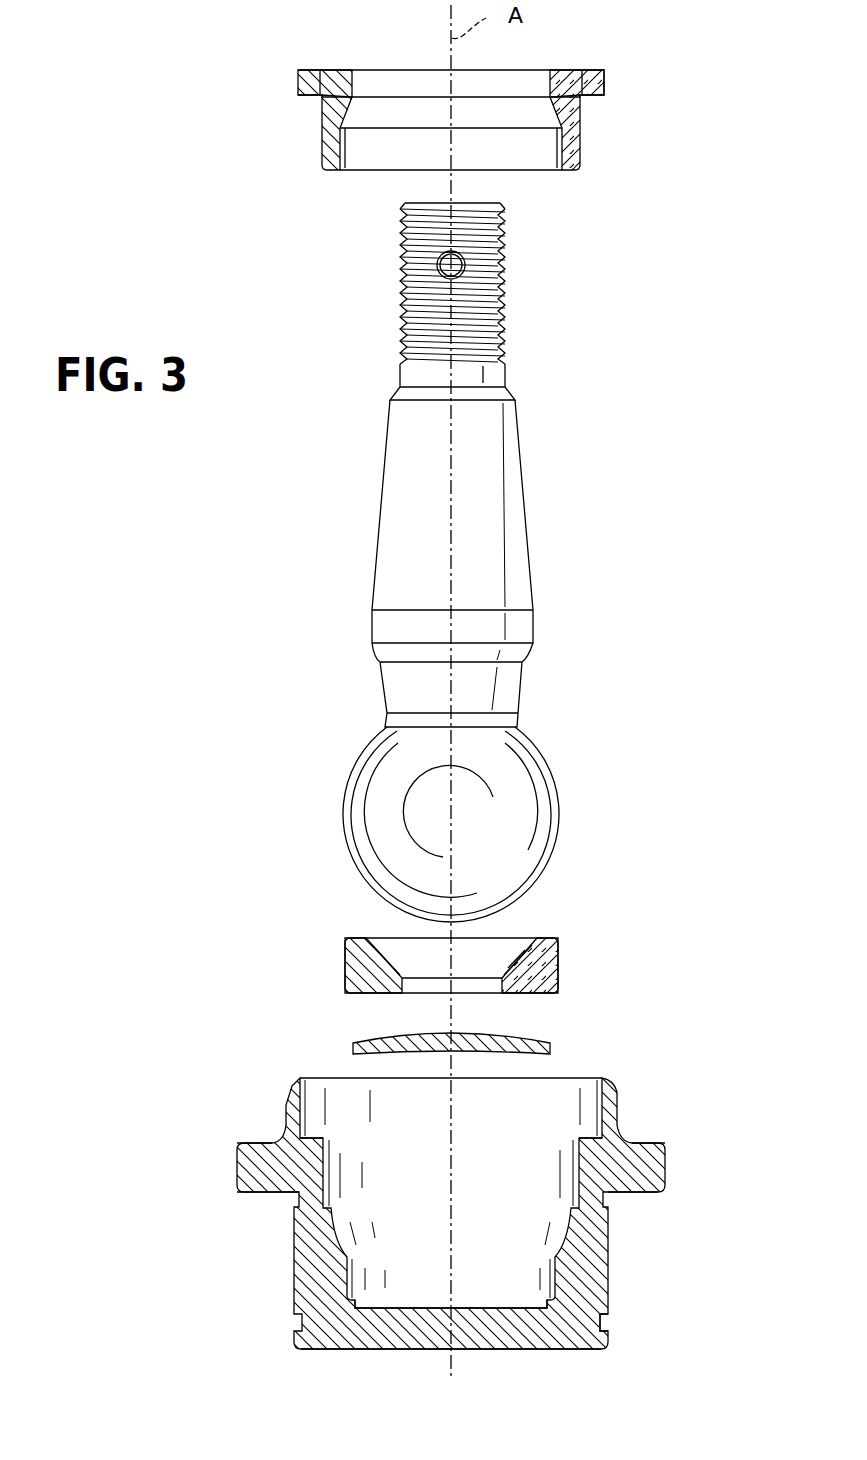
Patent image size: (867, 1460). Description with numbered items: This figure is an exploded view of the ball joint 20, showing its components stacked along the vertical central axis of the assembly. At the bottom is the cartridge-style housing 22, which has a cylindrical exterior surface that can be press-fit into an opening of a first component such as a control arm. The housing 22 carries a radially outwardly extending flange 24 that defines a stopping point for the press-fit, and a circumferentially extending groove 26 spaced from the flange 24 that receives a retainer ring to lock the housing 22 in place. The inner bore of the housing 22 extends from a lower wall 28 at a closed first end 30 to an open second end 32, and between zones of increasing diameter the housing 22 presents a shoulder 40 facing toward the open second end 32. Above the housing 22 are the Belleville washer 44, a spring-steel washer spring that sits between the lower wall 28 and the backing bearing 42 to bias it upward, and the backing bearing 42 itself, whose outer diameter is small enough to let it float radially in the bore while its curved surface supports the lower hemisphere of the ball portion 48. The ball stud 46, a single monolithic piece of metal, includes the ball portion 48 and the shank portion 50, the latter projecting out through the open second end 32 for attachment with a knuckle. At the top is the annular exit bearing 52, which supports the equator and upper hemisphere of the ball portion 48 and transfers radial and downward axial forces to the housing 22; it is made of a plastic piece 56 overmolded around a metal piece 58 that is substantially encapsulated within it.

The ball joint 20 is at (648, 286).
The housing 22 is at (614, 1276).
The flange 24 is at (648, 1172).
The groove 26 is at (603, 1322).
The lower wall 28 is at (503, 1337).
The closed first end 30 is at (425, 1307).
The open second end 32 is at (562, 1078).
The shoulder 40 is at (316, 1142).
The backing bearing 42 is at (362, 962).
The Belleville washer 44 is at (355, 1050).
The ball stud 46 is at (536, 526).
The ball portion 48 is at (488, 818).
The shank portion 50 is at (402, 512).
The exit bearing 52 is at (290, 133).
The plastic piece 56 is at (321, 142).
The metal piece 58 is at (602, 74).